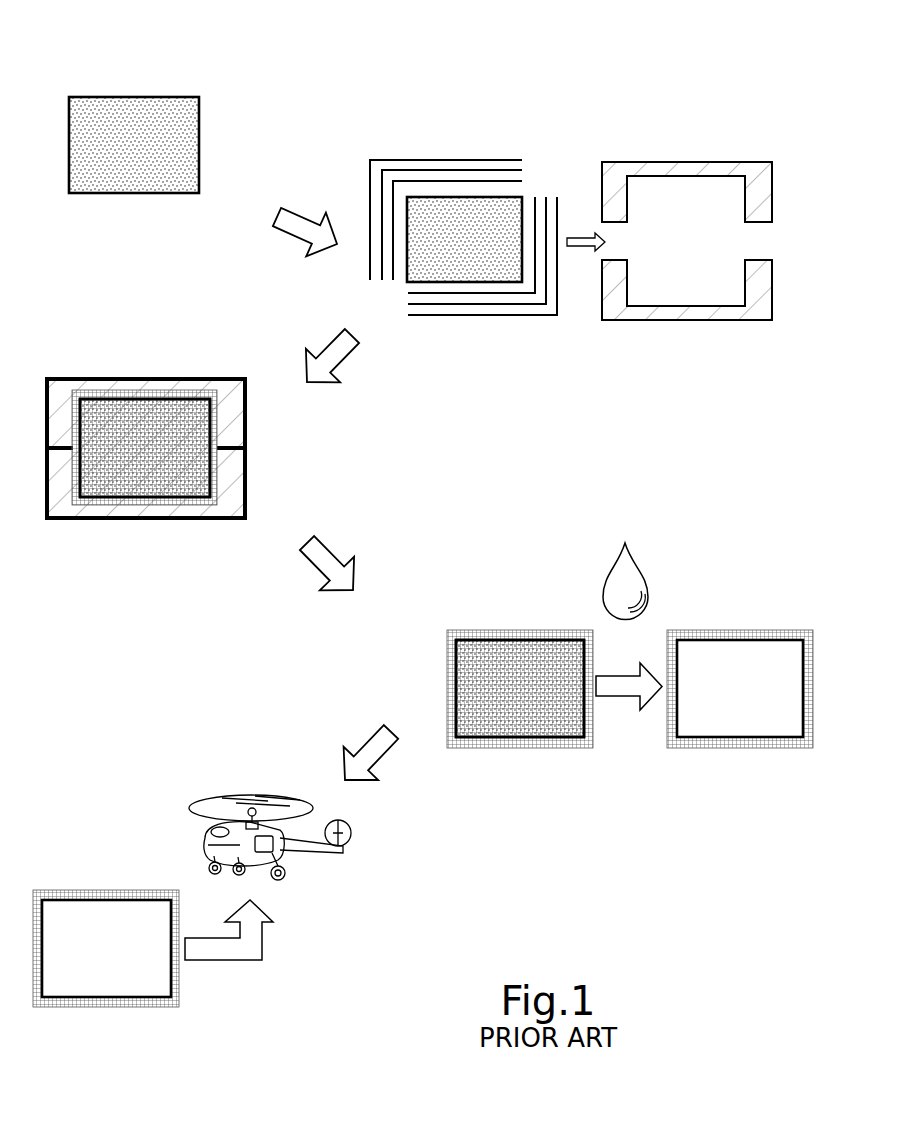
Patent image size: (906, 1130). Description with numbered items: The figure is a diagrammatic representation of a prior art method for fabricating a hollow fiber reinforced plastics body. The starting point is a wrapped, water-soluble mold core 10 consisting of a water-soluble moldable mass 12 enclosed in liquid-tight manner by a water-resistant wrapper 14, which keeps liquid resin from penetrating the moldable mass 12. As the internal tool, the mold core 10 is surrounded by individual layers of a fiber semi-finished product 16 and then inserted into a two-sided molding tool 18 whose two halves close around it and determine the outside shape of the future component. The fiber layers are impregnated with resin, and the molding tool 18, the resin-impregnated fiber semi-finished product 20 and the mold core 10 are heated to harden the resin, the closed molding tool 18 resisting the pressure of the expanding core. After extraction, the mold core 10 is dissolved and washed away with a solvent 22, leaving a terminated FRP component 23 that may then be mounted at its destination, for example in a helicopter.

The mold core 10 is at (348, 373).
The water-soluble moldable mass 12 is at (190, 123).
The water-resistant wrapper 14 is at (200, 170).
The fiber semi-finished product 16 is at (432, 180).
The two-sided molding tool 18 is at (706, 166).
The resin-impregnated fiber semi-finished product 20 is at (177, 390).
The solvent 22 is at (644, 573).
The FRP component 23 is at (735, 632).